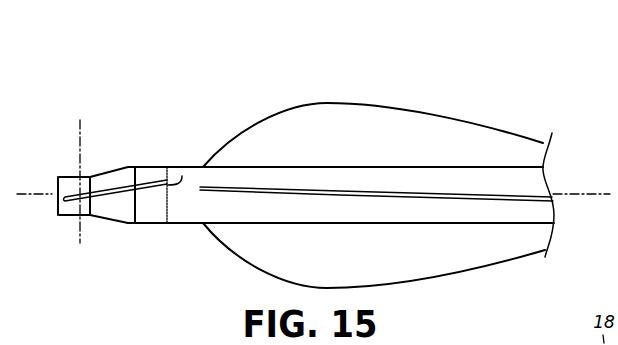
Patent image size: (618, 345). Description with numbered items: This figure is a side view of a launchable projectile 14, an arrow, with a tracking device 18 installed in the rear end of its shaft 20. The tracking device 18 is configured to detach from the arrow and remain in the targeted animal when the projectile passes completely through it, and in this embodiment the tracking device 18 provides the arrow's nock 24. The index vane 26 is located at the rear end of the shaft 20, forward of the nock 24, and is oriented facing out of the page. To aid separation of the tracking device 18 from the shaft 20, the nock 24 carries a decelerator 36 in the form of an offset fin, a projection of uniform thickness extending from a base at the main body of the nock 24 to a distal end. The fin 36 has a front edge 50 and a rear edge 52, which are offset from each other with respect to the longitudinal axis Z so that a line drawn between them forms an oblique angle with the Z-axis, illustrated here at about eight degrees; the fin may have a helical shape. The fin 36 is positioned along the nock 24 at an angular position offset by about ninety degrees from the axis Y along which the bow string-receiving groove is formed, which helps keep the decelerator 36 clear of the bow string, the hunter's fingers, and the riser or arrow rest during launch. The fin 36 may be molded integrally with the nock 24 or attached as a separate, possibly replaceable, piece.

The launchable projectile 14 is at (240, 98).
The tracking device 18 is at (118, 192).
The shaft 20 is at (342, 175).
The nock 24 is at (100, 173).
The index vane 26 is at (293, 190).
The decelerator 36 is at (103, 202).
The front edge 50 is at (180, 155).
The rear edge 52 is at (66, 200).
The axis Y is at (80, 127).
The longitudinal axis Z is at (583, 195).